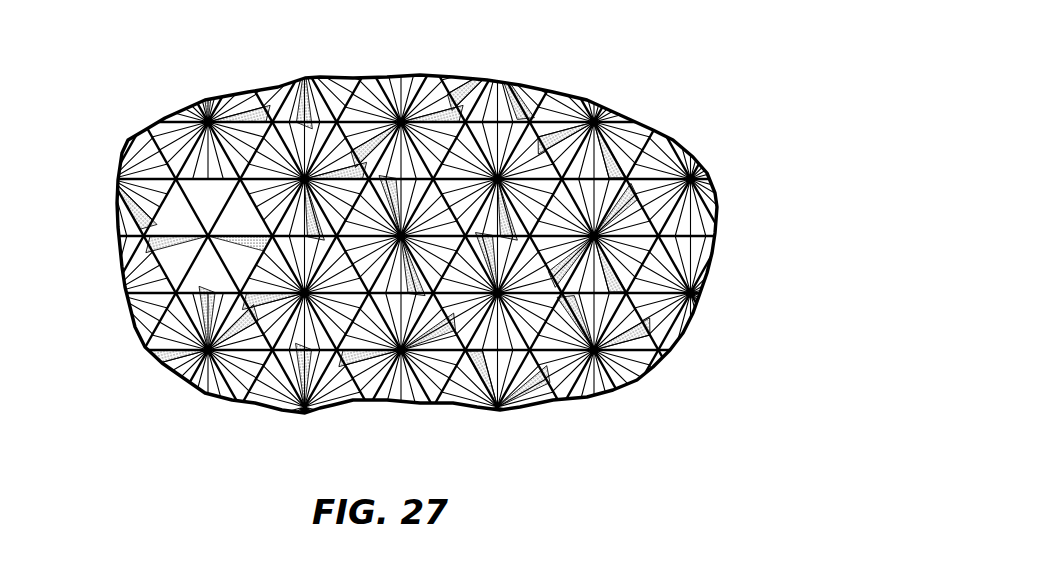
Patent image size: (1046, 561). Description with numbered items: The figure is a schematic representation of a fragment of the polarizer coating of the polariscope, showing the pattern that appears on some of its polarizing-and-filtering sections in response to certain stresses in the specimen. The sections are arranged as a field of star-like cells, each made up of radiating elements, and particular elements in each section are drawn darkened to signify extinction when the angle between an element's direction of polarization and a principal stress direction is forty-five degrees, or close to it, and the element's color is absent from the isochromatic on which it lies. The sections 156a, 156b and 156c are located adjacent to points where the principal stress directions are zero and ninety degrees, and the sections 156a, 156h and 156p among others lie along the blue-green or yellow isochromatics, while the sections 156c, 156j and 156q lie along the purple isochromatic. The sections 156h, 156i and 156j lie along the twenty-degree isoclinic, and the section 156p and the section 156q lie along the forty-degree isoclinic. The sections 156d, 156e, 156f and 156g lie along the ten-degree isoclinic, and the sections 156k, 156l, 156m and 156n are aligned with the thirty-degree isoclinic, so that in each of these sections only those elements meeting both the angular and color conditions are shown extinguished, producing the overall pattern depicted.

The polarizing-and-filtering section 156a is at (223, 100).
The polarizing-and-filtering section 156b is at (165, 207).
The polarizing-and-filtering section 156c is at (155, 317).
The polarizing-and-filtering section 156d is at (330, 75).
The polarizing-and-filtering section 156e is at (304, 179).
The polarizing-and-filtering section 156f is at (304, 295).
The polarizing-and-filtering section 156g is at (332, 395).
The polarizing-and-filtering section 156h is at (427, 78).
The polarizing-and-filtering section 156i is at (401, 236).
The polarizing-and-filtering section 156j is at (420, 393).
The polarizing-and-filtering section 156k is at (533, 86).
The polarizing-and-filtering section 156l is at (498, 179).
The polarizing-and-filtering section 156m is at (498, 295).
The polarizing-and-filtering section 156n is at (504, 412).
The polarizing-and-filtering section 156p is at (645, 205).
The polarizing-and-filtering section 156q is at (640, 374).